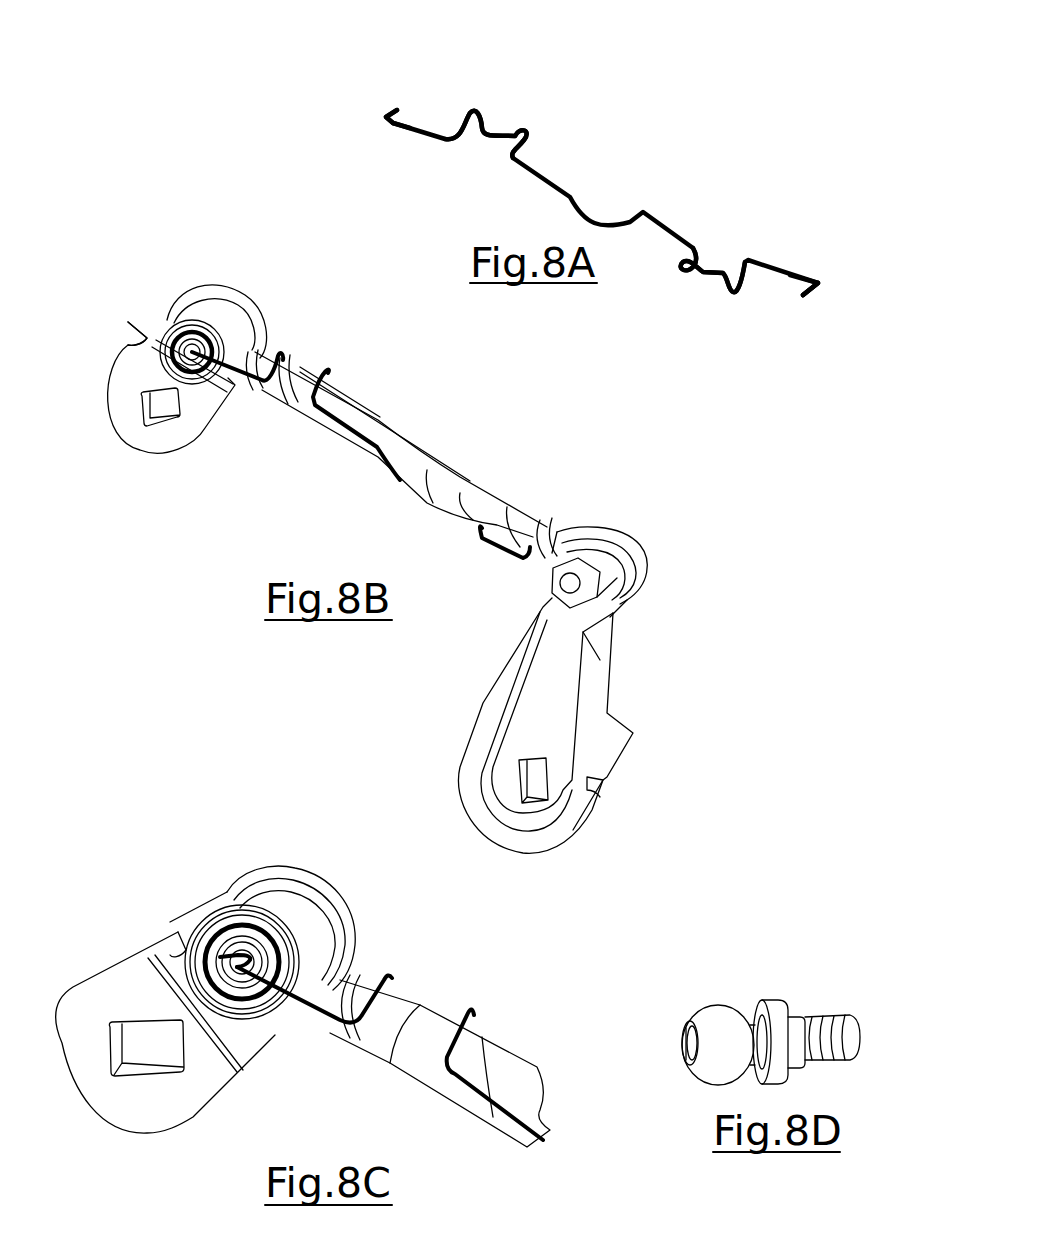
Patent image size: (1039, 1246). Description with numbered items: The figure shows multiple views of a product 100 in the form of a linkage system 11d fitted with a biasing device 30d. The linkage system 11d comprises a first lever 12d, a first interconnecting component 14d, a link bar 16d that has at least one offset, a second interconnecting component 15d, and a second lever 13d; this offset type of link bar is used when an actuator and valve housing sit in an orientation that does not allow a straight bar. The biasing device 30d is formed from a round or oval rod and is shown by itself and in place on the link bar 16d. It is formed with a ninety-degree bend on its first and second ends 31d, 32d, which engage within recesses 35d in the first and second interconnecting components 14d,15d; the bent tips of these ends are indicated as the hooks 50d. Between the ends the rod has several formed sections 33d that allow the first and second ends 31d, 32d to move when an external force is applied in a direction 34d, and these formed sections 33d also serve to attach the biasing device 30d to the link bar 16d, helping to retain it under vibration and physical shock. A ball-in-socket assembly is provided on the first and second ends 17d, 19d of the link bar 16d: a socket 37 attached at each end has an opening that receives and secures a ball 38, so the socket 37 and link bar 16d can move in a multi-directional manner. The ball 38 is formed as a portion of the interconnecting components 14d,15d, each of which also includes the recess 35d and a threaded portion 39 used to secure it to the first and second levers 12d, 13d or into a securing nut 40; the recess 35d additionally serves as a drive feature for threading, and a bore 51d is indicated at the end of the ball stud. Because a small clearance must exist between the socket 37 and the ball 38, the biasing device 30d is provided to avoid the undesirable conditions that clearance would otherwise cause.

In FIG. 8B, the linkage assembly 100 is at (598, 388).
In FIG. 8C, the linkage assembly 100 is at (72, 902).
In FIG. 8D, the linkage assembly 100 is at (895, 985).
In FIG. 8B, the linkage system 11d is at (406, 444).
In FIG. 8B, the first lever 12d is at (201, 438).
In FIG. 8C, the first lever 12d is at (217, 1093).
In FIG. 8B, the second lever 13d is at (480, 723).
In FIG. 8B, the first interconnecting component 14d is at (135, 345).
In FIG. 8C, the first interconnecting component 14d is at (215, 965).
In FIG. 8B, the second interconnecting component 15d is at (558, 587).
In FIG. 8D, the first and second interconnecting components 14d,15d is at (776, 992).
In FIG. 8B, the link bar 16d is at (380, 418).
In FIG. 8C, the link bar 16d is at (437, 1003).
In FIG. 8B, the first end of link bar 17d is at (221, 320).
In FIG. 8C, the first end of link bar 17d is at (280, 918).
In FIG. 8B, the second end of link bar 19d is at (623, 525).
In FIG. 8A, the biasing device 30d is at (535, 177).
In FIG. 8B, the biasing device 30d is at (344, 435).
In FIG. 8A, the first end of biasing device 31d is at (400, 100).
In FIG. 8C, the first end of biasing device 31d is at (244, 946).
In FIG. 8A, the second end of biasing device 32d is at (815, 294).
In FIG. 8A, the formed sections 33d is at (434, 129).
In FIG. 8C, the formed sections 33d is at (281, 1003).
In FIG. 8B, the direction 34d is at (645, 583).
In FIG. 8C, the recess 35d is at (221, 947).
In FIG. 8D, the recess 35d is at (688, 1043).
In FIG. 8C, the socket 37 is at (211, 921).
In FIG. 8C, the ball 38 is at (269, 948).
In FIG. 8D, the ball 38 is at (718, 1005).
In FIG. 8D, the threaded portion 39 is at (831, 1014).
In FIG. 8B, the securing nut 40 is at (596, 600).
In FIG. 8A, the wire hook 50d is at (407, 110).
In FIG. 8B, the bore 51d is at (178, 341).
In FIG. 8C, the bore 51d is at (231, 948).
In FIG. 8D, the bore 51d is at (682, 1057).